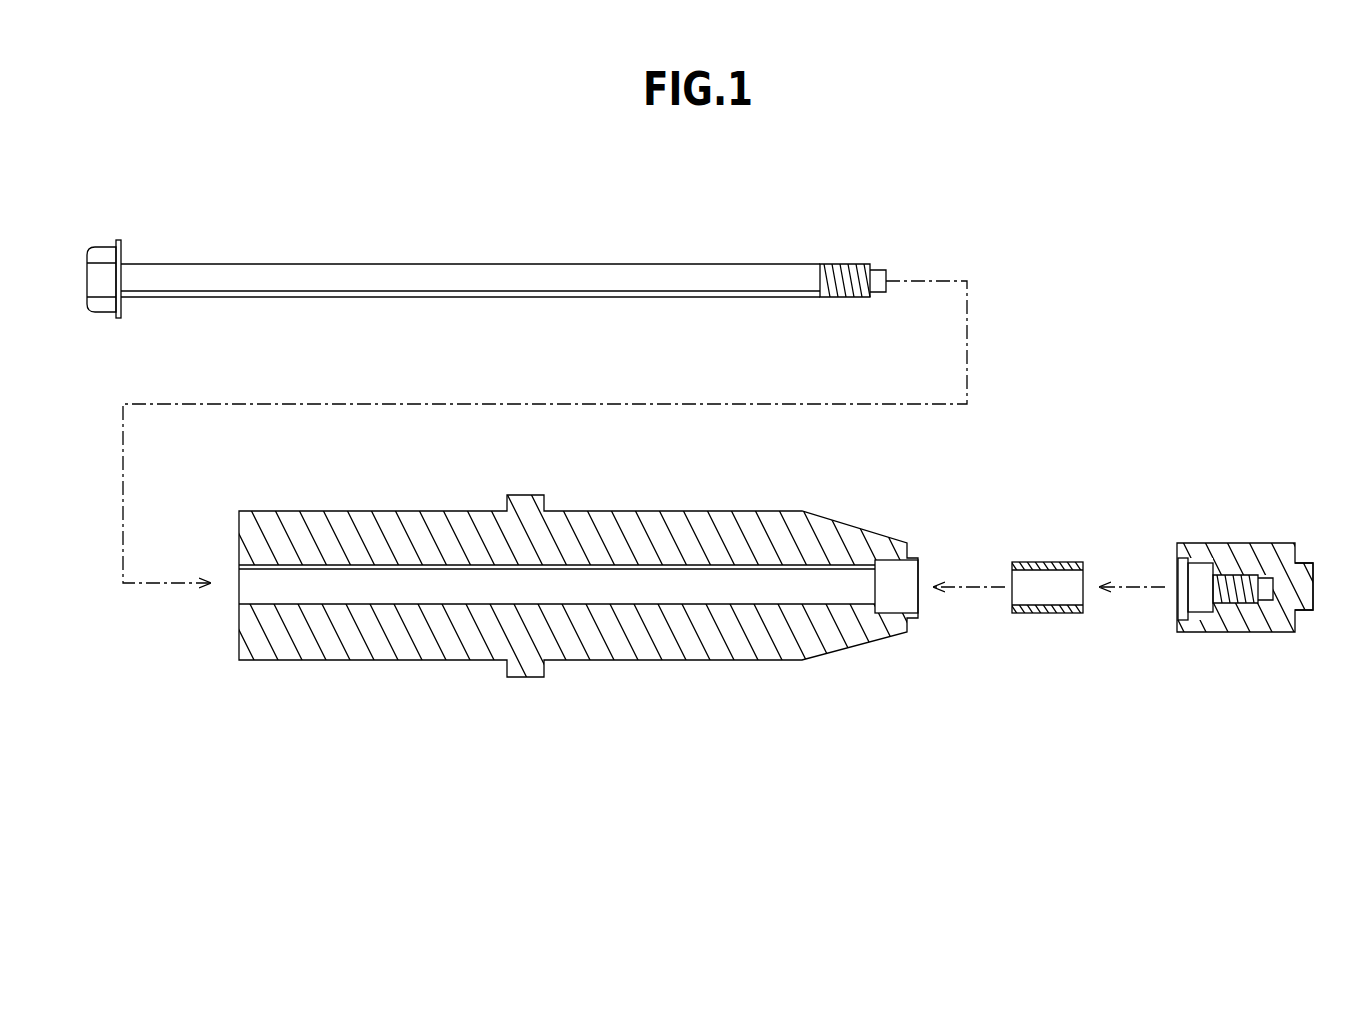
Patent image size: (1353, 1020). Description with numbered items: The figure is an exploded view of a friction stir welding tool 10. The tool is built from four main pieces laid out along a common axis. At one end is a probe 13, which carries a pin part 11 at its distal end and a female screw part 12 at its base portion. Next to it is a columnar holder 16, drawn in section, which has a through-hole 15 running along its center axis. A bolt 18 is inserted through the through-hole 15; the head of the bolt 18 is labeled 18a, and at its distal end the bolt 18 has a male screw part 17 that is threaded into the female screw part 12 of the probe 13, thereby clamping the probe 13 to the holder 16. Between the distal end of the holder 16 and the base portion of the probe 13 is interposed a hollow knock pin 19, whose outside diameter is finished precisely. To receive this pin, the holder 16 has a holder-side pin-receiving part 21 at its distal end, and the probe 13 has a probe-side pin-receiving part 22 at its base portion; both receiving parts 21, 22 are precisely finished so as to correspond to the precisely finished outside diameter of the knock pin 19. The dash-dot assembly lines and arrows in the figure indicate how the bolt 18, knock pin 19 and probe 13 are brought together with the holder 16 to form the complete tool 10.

The friction stir welding tool 10 is at (1118, 344).
The pin part 11 is at (1303, 612).
The female screw part 12 is at (1228, 603).
The probe 13 is at (1245, 543).
The through-hole 15 is at (588, 600).
The columnar holder 16 is at (706, 511).
The male screw part 17 is at (840, 268).
The bolt 18 is at (482, 264).
The bolt head 18a is at (100, 248).
The hollow knock pin 19 is at (1038, 562).
The holder-side pin-receiving part 21 is at (905, 608).
The probe-side pin-receiving part 22 is at (1178, 600).